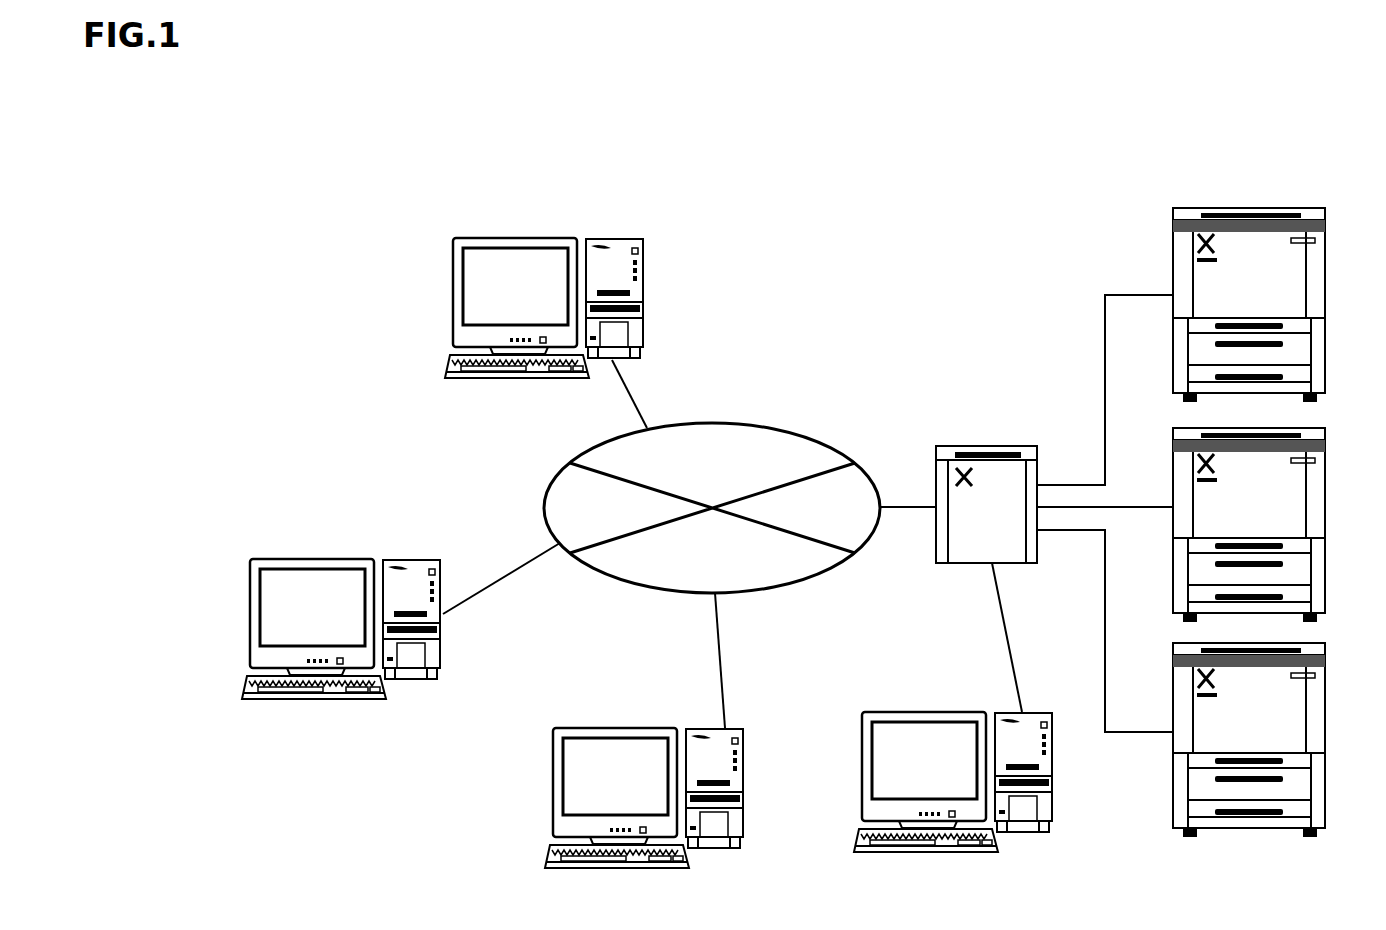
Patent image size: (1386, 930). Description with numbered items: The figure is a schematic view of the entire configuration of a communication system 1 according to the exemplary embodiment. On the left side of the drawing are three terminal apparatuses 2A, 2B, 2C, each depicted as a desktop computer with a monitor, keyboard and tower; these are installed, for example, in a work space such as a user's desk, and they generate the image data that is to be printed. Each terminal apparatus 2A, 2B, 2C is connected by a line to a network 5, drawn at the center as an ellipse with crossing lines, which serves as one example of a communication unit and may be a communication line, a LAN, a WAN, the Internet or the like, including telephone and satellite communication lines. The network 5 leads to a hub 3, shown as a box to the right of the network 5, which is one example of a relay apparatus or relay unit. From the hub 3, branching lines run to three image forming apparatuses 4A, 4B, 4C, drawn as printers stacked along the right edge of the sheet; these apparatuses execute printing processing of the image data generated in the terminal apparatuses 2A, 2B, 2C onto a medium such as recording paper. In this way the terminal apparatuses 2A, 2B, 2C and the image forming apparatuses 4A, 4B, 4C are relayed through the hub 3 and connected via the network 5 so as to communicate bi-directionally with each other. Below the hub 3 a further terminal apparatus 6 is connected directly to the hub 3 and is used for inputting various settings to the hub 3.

The communication system 1 is at (872, 124).
The terminal apparatus 2A is at (545, 238).
The terminal apparatus 2B is at (343, 559).
The terminal apparatus 2C is at (645, 728).
The hub 3 is at (966, 446).
The image forming apparatus 4A is at (1327, 278).
The image forming apparatus 4B is at (1327, 495).
The image forming apparatus 4C is at (1327, 713).
The network 5 is at (775, 423).
The terminal apparatus 6 is at (953, 712).